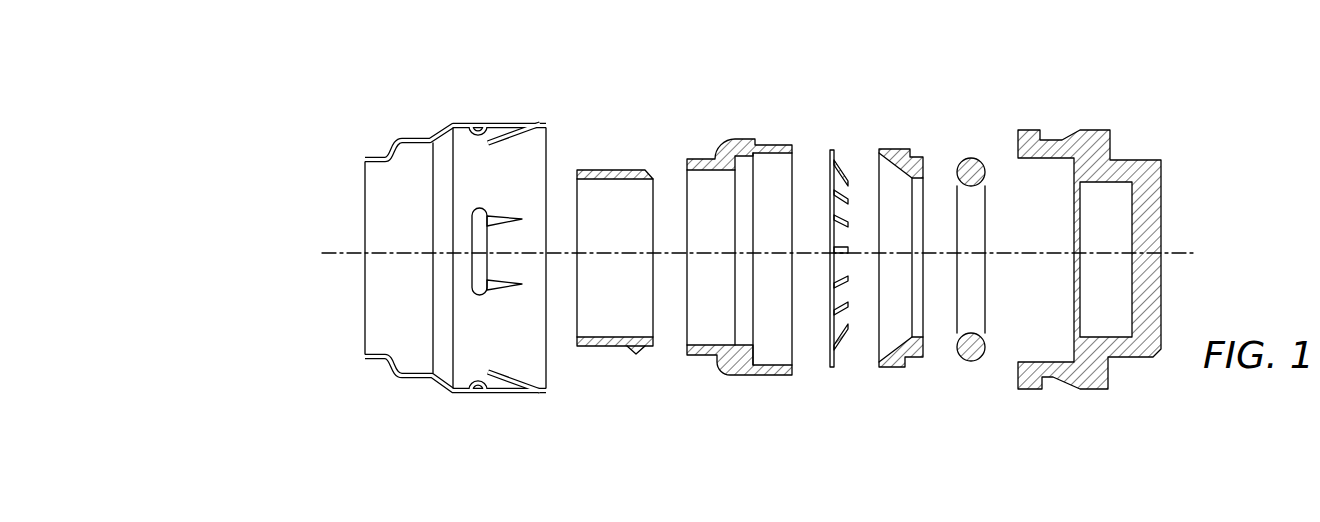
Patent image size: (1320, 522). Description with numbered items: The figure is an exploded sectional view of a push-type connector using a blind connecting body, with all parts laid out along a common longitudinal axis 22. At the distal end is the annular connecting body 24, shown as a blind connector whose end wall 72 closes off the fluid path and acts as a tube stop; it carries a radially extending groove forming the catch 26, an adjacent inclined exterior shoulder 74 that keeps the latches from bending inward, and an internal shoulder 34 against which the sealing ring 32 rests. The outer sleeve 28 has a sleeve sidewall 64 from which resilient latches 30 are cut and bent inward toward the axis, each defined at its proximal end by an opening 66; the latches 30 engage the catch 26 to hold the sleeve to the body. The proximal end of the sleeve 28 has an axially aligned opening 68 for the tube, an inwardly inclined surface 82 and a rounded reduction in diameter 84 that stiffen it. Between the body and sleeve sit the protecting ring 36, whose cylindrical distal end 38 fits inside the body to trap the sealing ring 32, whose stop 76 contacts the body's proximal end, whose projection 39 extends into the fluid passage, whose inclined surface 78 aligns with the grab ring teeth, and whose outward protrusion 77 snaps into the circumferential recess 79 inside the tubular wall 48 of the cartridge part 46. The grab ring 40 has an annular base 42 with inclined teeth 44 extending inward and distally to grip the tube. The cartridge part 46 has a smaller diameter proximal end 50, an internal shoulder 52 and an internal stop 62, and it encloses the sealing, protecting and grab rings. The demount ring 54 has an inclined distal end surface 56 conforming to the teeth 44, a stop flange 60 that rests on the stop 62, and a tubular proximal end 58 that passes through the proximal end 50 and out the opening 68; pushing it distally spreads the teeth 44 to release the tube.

The longitudinal axis 22 is at (330, 252).
The connecting body 24 is at (1170, 158).
The catch 26 is at (1047, 137).
The sleeve 28 is at (400, 114).
The latch 30 is at (547, 125).
The sealing ring 32 is at (978, 148).
The internal shoulder 34 is at (1075, 170).
The protecting ring 36 is at (912, 128).
The distal end of protecting ring 38 is at (922, 352).
The projection 39 is at (919, 156).
The grab ring 40 is at (840, 126).
The annular base 42 is at (834, 160).
The teeth 44 is at (851, 223).
The cartridge part 46 is at (762, 128).
The tubular wall 48 is at (777, 151).
The proximal end of cartridge part 50 is at (700, 158).
The internal shoulder 52 is at (757, 156).
The demount ring 54 is at (639, 120).
The distal end surface 56 is at (643, 171).
The tubular proximal end 58 is at (607, 170).
The stop flange 60 is at (637, 173).
The internal stop 62 is at (756, 165).
The sleeve sidewall 64 is at (469, 123).
The opening 66 is at (473, 268).
The axially aligned opening 68 is at (366, 157).
The end wall 72 is at (1148, 215).
The inclined exterior shoulder 74 is at (1070, 138).
The stop 76 is at (915, 152).
The protrusion 77 is at (884, 150).
The inclined surface 78 is at (878, 352).
The circumferential recess 79 is at (768, 153).
The inwardly inclined surface 82 is at (441, 136).
The rounded reduction in diameter 84 is at (390, 141).